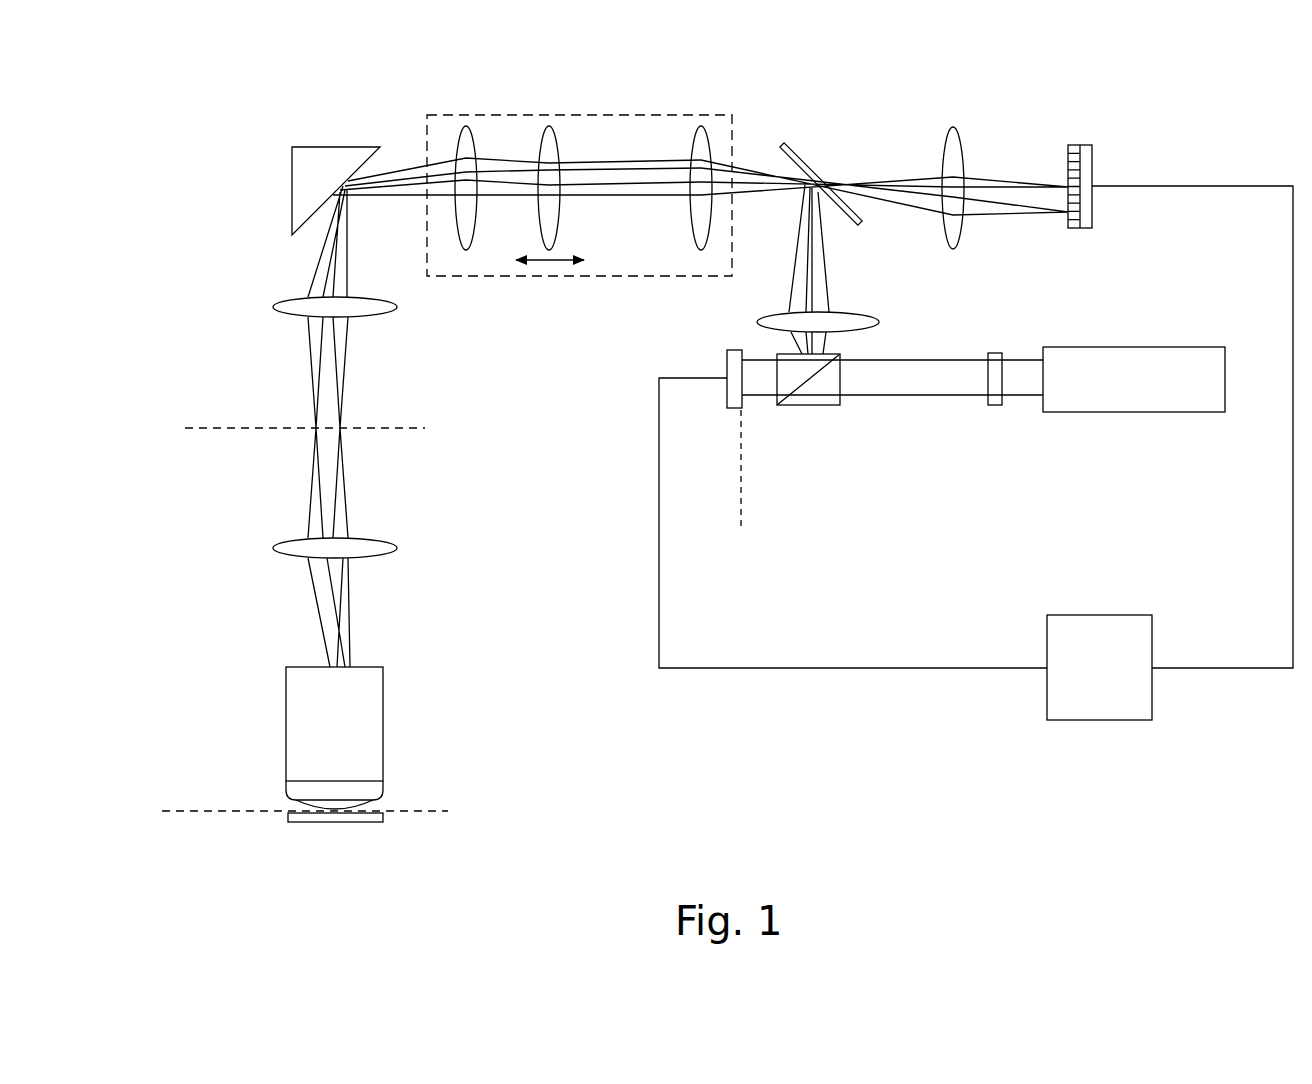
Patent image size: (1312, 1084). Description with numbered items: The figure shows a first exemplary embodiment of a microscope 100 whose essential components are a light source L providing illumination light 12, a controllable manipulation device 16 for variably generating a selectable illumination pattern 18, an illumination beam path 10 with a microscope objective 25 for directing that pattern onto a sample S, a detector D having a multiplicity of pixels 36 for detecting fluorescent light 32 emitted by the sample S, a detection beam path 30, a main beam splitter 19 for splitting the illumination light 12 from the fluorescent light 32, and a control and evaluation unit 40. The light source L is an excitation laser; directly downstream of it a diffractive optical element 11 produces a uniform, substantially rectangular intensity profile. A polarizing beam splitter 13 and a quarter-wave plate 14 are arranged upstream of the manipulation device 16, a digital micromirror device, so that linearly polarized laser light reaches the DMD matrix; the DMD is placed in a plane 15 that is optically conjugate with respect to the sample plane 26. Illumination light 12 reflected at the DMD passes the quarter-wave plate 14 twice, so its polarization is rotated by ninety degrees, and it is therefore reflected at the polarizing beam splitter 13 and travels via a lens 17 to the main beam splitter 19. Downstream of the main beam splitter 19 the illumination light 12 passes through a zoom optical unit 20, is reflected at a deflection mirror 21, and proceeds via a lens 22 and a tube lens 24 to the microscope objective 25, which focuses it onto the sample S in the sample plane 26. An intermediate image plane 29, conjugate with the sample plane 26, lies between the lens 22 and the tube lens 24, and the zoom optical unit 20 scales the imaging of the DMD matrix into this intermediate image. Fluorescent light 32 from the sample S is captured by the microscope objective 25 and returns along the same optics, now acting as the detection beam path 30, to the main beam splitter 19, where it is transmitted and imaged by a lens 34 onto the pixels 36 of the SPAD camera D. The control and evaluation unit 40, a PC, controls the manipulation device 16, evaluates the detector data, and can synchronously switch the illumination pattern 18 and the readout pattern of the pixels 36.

The microscope 100 is at (590, 660).
The illumination beam path 10 is at (982, 292).
The diffractive optical element 11 is at (995, 398).
The illumination light 12 is at (887, 383).
The polarizing beam splitter 13 is at (825, 398).
The quarter-wave plate 14 is at (785, 400).
The plane optically conjugate with respect to the sample plane 15 is at (742, 520).
The manipulation device 16 is at (727, 362).
The lens 17 is at (878, 323).
The illumination pattern 18 is at (822, 277).
The main beam splitter 19 is at (797, 152).
The zoom optical unit 20 is at (600, 115).
The deflection mirror 21 is at (332, 158).
The lens 22 is at (280, 305).
The tube lens 24 is at (280, 548).
The microscope objective 25 is at (366, 711).
The sample plane 26 is at (178, 809).
The intermediate image plane 29 is at (199, 430).
The detection beam path 30 is at (977, 96).
The fluorescent light 32 is at (1000, 178).
The lens 34 is at (953, 127).
The pixels 36 is at (1088, 150).
The detector D is at (1088, 197).
The light source L is at (1134, 379).
The control and evaluation unit 40 is at (1099, 667).
The sample S is at (300, 822).